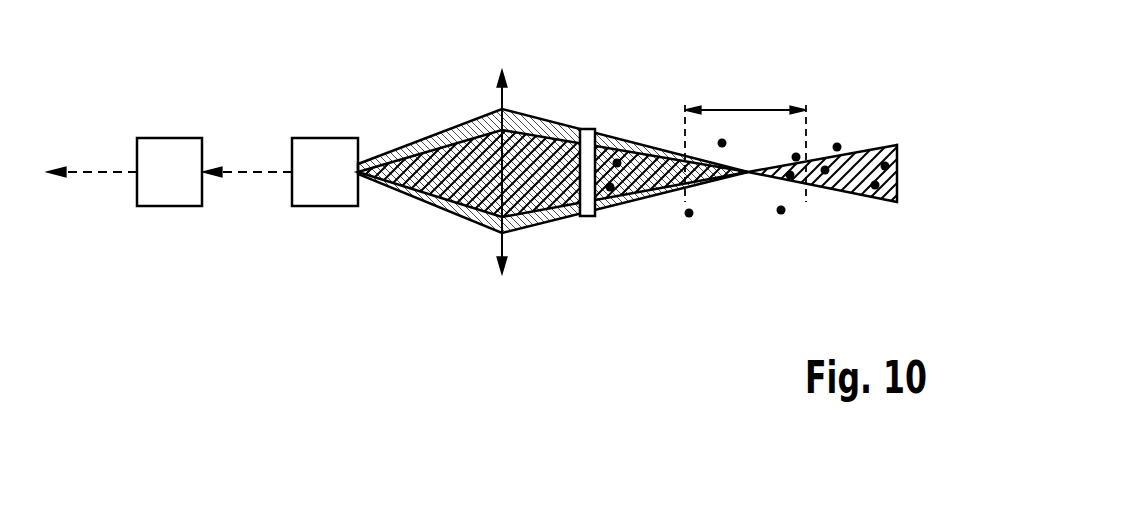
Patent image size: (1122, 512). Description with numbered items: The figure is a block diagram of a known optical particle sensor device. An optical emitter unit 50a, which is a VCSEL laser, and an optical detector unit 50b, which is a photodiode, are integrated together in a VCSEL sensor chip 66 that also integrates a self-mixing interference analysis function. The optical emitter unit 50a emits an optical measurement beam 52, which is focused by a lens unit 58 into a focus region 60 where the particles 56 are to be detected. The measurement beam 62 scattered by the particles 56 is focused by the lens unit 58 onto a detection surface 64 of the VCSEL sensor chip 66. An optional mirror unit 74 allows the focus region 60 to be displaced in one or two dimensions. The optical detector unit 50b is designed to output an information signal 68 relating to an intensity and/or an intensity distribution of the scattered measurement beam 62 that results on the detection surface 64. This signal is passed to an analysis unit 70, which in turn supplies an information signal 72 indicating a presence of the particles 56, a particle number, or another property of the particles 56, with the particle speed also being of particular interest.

The information signal 72 is at (100, 168).
The analysis unit 70 is at (168, 138).
The information signal 68 is at (256, 168).
The VCSEL sensor chip 66 is at (325, 138).
The detection surface 64 is at (372, 163).
The scattered measurement beam 62 is at (537, 125).
The lens unit 58 is at (500, 172).
The mirror unit 74 is at (588, 128).
The focus region 60 is at (745, 109).
The particles 56 is at (778, 215).
The optical measurement beam 52 is at (855, 176).
The optical emitter unit 50a is at (308, 215).
The optical detector unit 50b is at (308, 215).